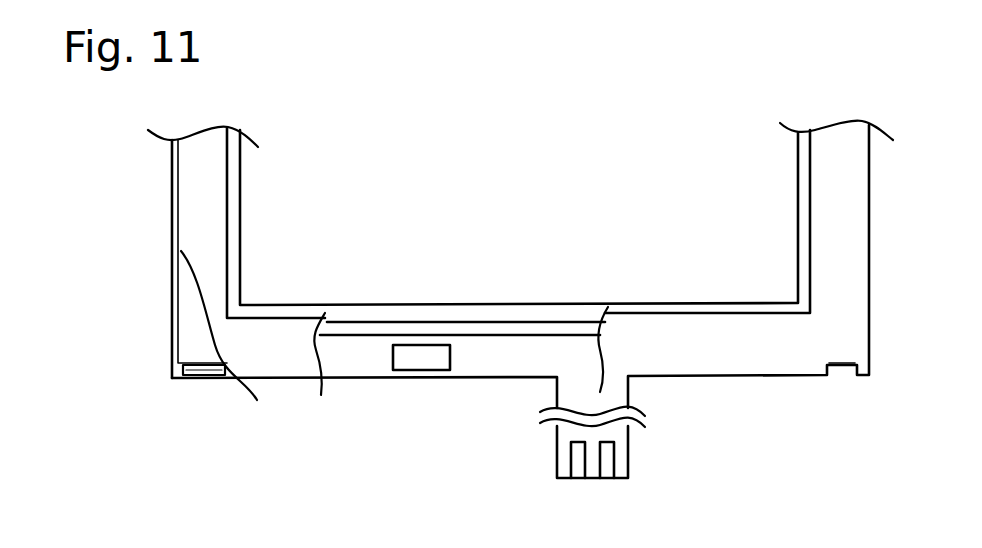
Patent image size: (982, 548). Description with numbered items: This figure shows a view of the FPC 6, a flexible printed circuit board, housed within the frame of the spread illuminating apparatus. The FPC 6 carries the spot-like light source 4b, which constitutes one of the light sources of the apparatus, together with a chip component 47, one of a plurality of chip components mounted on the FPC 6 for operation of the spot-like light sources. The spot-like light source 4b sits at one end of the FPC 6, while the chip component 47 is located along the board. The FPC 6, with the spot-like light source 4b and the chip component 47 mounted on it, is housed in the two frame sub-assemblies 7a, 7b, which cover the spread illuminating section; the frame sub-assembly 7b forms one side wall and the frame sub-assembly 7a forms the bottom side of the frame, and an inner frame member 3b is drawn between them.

The frame sub-assembly 7b is at (160, 181).
The inner frame 3b is at (188, 302).
The spot-like light source 4b is at (205, 376).
The FPC 6 is at (358, 372).
The chip component 47 is at (432, 365).
The frame sub-assembly 7a is at (738, 385).